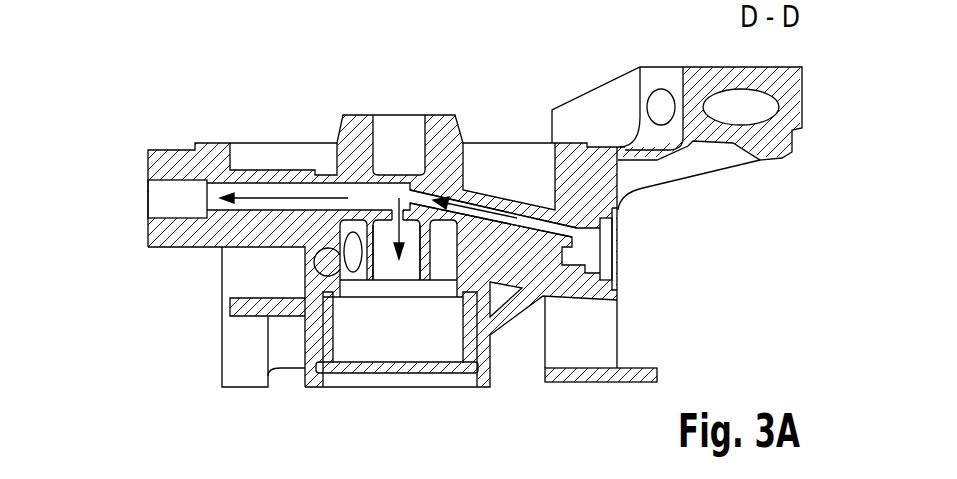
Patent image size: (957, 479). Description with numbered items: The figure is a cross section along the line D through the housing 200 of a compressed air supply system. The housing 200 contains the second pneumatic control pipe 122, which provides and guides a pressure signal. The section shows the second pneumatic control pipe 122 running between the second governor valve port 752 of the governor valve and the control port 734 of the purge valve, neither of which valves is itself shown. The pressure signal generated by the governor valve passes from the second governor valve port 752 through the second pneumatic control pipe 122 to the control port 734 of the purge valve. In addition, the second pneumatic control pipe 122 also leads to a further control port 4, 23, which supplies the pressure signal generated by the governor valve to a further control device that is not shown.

The housing 200 is at (280, 101).
The further control port 4 is at (131, 195).
The further control port 23 is at (158, 198).
The second pneumatic control pipe 122 is at (530, 220).
The second governor valve port 752 is at (607, 252).
The control port 734 is at (377, 342).